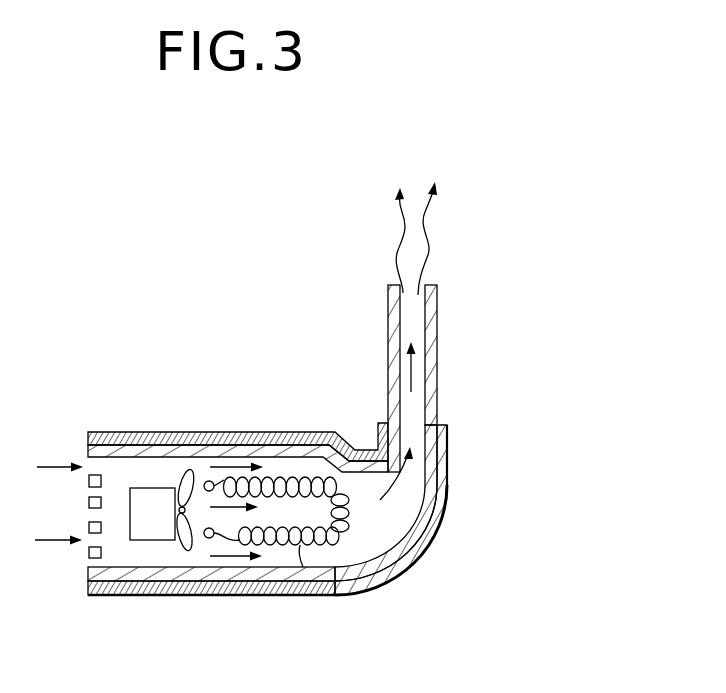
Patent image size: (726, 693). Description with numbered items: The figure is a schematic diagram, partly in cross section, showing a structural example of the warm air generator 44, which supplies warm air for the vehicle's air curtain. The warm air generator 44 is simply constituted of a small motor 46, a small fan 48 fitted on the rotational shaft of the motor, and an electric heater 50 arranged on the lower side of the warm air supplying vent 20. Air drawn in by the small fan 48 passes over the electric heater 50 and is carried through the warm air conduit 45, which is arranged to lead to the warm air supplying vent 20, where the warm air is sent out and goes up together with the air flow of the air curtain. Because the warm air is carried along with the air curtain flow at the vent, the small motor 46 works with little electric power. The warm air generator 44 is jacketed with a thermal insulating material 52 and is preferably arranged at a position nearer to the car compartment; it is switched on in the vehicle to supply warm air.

The warm air supplying vent 20 is at (420, 284).
The warm air generator 44 is at (455, 418).
The warm air conduit 45 is at (430, 342).
The small motor 46 is at (142, 497).
The small fan 48 is at (192, 478).
The electric heater 50 is at (353, 586).
The thermal insulating material 52 is at (187, 598).